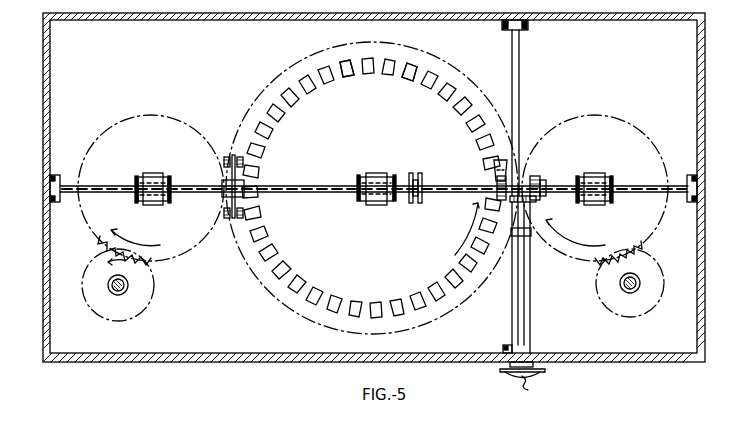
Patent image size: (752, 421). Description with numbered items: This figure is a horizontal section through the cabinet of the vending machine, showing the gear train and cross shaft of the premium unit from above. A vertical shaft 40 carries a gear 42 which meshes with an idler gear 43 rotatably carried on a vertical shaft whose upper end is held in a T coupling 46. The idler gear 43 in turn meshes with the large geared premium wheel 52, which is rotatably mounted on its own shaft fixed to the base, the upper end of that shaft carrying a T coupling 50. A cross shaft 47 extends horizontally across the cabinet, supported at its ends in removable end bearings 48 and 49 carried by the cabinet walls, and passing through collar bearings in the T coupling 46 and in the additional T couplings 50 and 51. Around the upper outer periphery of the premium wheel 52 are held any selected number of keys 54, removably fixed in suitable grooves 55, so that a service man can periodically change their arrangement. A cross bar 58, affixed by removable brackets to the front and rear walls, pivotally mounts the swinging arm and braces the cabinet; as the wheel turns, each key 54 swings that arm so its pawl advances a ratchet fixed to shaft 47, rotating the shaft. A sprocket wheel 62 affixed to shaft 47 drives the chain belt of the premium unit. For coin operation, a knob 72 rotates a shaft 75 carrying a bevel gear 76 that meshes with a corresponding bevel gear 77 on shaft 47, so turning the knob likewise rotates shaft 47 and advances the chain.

The shaft 40 is at (641, 283).
The gear 42 is at (617, 302).
The idler gear 43 is at (603, 121).
The T coupling 46 is at (593, 178).
The cross shaft 47 is at (317, 184).
The removable end bearing 48 is at (689, 184).
The removable end bearing 49 is at (63, 183).
The T coupling 50 is at (382, 181).
The T coupling 51 is at (147, 178).
The geared premium wheel 52 is at (470, 76).
The key 54 is at (392, 72).
The groove 55 is at (336, 71).
The cross bar 58 is at (520, 52).
The sprocket wheel 62 is at (225, 174).
The knob 72 is at (535, 391).
The shaft 75 is at (528, 314).
The bevel gear 76 is at (536, 201).
The bevel gear 77 is at (538, 180).